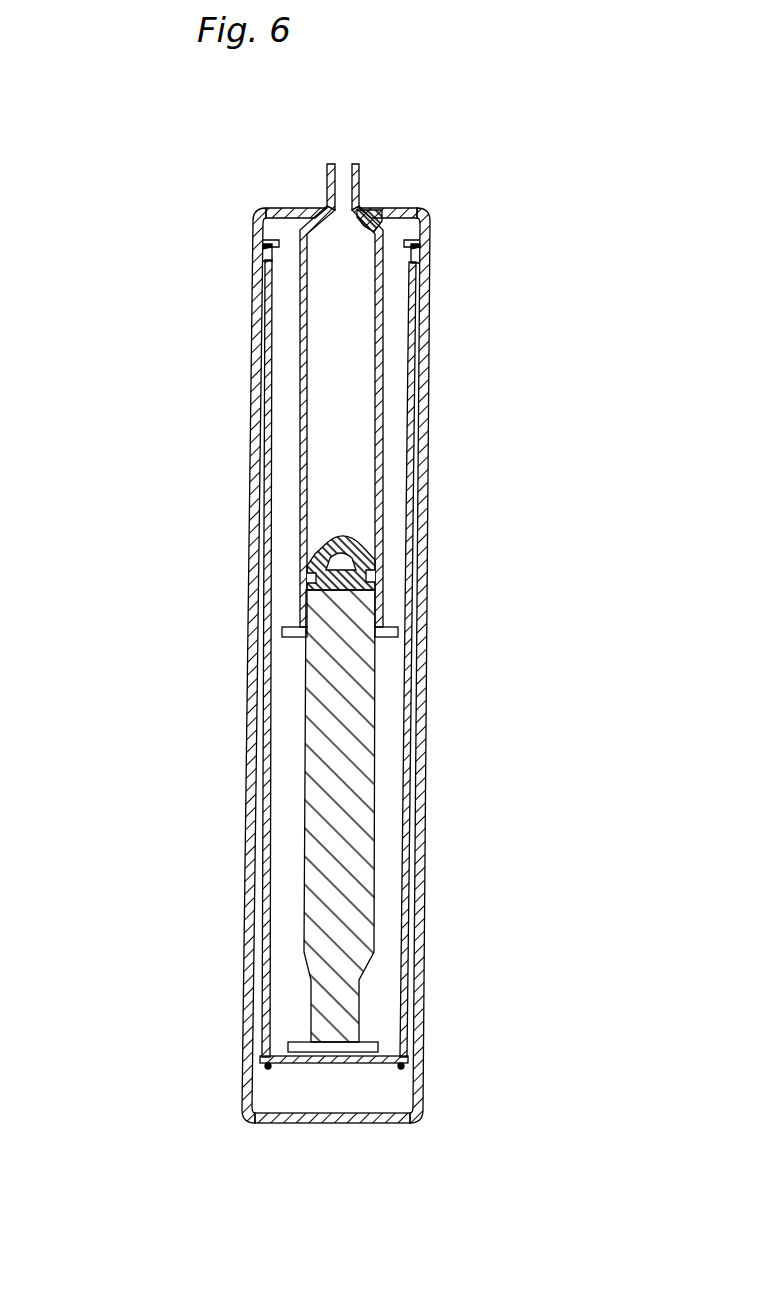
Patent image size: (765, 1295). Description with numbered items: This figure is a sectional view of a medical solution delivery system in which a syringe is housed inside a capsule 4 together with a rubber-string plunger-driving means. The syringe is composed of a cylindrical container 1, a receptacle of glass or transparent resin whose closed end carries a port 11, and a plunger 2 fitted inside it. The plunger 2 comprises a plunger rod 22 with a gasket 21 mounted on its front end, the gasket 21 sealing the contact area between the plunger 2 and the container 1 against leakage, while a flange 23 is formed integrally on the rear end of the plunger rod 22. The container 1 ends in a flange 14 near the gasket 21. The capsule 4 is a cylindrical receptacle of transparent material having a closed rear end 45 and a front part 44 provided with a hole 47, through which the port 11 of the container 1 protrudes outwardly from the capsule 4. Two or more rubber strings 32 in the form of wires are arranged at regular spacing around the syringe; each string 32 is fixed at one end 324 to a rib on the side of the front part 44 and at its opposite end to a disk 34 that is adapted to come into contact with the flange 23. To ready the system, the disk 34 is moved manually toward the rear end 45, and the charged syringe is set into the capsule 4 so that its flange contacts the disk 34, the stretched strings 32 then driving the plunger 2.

The cylindrical container 1 is at (298, 400).
The plunger 2 is at (388, 764).
The capsule 4 is at (430, 315).
The port 11 is at (356, 174).
The barrel flange 14 is at (290, 633).
The gasket 21 is at (357, 551).
The plunger rod 22 is at (373, 893).
The flange 23 is at (377, 1042).
The rubber string 32 is at (413, 440).
The disk 34 is at (360, 1064).
The front part 44 is at (282, 207).
The closed end 45 is at (323, 1124).
The hole 47 is at (385, 209).
The end of spring wire 324 is at (256, 243).